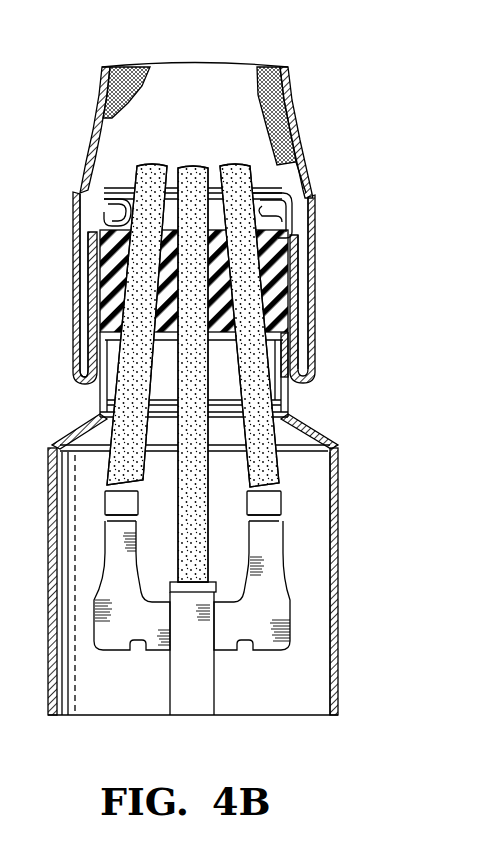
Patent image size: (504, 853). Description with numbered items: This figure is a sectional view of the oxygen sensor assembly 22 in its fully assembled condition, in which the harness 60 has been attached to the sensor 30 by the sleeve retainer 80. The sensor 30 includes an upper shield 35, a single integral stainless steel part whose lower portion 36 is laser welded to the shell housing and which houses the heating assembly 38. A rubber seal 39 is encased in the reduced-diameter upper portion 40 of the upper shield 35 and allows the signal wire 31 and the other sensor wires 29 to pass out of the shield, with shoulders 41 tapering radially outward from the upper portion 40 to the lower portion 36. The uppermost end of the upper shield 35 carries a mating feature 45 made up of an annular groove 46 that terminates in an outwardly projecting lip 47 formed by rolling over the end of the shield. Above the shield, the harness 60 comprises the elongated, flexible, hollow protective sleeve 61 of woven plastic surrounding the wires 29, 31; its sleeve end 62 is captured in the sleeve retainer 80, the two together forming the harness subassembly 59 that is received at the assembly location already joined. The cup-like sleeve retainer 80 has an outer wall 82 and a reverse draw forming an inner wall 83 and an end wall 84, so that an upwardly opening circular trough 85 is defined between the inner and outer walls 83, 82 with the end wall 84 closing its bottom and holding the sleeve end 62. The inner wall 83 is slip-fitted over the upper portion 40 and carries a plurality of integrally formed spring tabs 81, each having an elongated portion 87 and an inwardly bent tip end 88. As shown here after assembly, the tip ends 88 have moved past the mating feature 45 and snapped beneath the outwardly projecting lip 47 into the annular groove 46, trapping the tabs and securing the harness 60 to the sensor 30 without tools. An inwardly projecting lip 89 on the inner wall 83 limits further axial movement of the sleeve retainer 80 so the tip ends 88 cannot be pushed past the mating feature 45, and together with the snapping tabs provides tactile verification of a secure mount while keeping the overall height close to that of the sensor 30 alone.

The oxygen sensor assembly 22 is at (298, 55).
The sensor wires 29 is at (150, 177).
The sensor 30 is at (340, 516).
The signal wire 31 is at (194, 175).
The upper shield 35 is at (340, 587).
The lower portion 36 is at (338, 646).
The heating assembly 38 is at (195, 717).
The rubber seal 39 is at (278, 275).
The upper portion 40 is at (287, 388).
The shoulders 41 is at (318, 435).
The mating feature 45 is at (105, 210).
The annular groove 46 is at (100, 221).
The outwardly projecting lip 47 is at (107, 185).
The harness subassembly 59 is at (297, 121).
The harness 60 is at (292, 94).
The protective sleeve 61 is at (100, 103).
The sleeve end 62 is at (308, 328).
The sleeve retainer 80 is at (70, 258).
The spring tabs 81 is at (303, 249).
The outer wall 82 is at (82, 330).
The inner wall 83 is at (84, 291).
The end wall 84 is at (87, 378).
The trough 85 is at (312, 195).
The elongated portion 87 is at (300, 300).
The inwardly bent tip end 88 is at (288, 213).
The inwardly projecting lip 89 is at (283, 187).